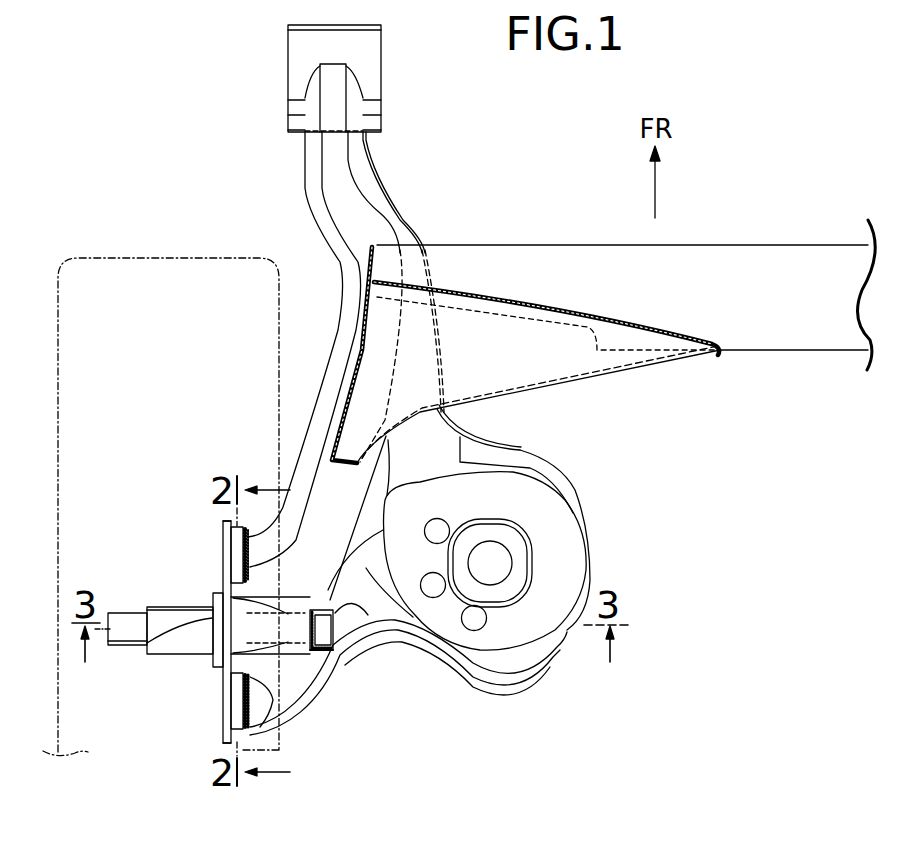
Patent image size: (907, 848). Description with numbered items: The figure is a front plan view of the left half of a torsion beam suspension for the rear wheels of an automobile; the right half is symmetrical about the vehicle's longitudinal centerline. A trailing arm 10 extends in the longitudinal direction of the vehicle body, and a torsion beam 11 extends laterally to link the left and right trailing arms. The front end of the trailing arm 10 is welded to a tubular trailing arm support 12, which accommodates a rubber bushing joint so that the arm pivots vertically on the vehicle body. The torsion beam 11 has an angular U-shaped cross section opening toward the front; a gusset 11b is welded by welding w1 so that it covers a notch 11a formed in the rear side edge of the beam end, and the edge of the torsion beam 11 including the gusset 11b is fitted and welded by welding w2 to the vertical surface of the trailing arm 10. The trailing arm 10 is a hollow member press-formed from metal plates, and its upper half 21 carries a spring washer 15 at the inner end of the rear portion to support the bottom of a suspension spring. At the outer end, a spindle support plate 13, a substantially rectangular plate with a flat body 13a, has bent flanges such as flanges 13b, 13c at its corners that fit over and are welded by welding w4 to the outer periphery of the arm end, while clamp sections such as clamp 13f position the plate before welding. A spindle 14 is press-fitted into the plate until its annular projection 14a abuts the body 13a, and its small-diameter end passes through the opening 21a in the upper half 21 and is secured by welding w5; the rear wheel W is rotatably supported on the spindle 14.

The trailing arm 10 is at (296, 401).
The torsion beam 11 is at (760, 242).
The notch 11a is at (487, 314).
The gusset 11b is at (543, 392).
The trailing arm support 12 is at (373, 73).
The spindle support plate 13 is at (219, 719).
The flat body 13a is at (218, 571).
The bent flange 13b is at (237, 697).
The bent flange 13c is at (237, 550).
The clamp section 13f is at (227, 627).
The spindle 14 is at (144, 601).
The annular projection 14a is at (152, 634).
The spring washer 15 is at (548, 527).
The upper half 21 is at (337, 497).
The opening 21a is at (311, 611).
The rear wheel W is at (140, 257).
The welding w1 is at (608, 317).
The welding w2 is at (358, 343).
The welding w4 is at (251, 556).
The welding w5 is at (367, 570).